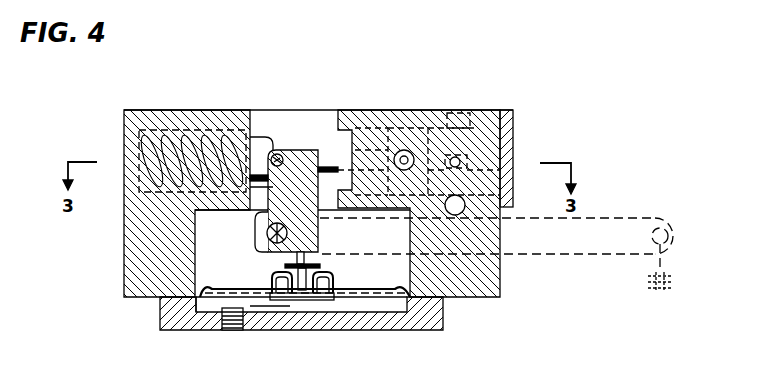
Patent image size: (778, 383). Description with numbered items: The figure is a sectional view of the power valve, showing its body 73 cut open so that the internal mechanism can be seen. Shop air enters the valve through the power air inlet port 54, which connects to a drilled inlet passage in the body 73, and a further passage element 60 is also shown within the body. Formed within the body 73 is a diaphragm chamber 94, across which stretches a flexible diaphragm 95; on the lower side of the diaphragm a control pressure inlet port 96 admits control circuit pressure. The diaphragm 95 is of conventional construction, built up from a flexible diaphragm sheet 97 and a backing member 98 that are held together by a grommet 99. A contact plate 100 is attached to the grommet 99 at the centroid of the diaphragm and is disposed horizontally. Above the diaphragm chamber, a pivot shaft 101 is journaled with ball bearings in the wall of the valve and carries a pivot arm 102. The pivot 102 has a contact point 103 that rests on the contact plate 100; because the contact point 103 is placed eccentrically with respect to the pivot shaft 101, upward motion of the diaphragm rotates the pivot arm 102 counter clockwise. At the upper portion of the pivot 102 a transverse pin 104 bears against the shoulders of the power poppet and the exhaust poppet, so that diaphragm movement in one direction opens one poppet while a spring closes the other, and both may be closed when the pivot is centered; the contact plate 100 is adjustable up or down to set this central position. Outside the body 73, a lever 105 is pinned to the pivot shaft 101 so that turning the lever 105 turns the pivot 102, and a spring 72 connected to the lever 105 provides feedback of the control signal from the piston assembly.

The power air inlet port 54 is at (462, 200).
The shaft 60 is at (405, 157).
The spring 72 is at (674, 282).
The body 73 is at (500, 282).
The diaphragm chamber 94 is at (375, 305).
The flexible diaphragm 95 is at (270, 306).
The control pressure inlet port 96 is at (234, 326).
The flexible diaphragm sheet 97 is at (206, 306).
The backing member 98 is at (253, 286).
The grommet 99 is at (314, 301).
The contact plate 100 is at (322, 266).
The pivot shaft 101 is at (263, 233).
The pivot arm 102 is at (295, 176).
The contact point 103 is at (308, 256).
The transverse pin 104 is at (279, 155).
The lever 105 is at (609, 218).